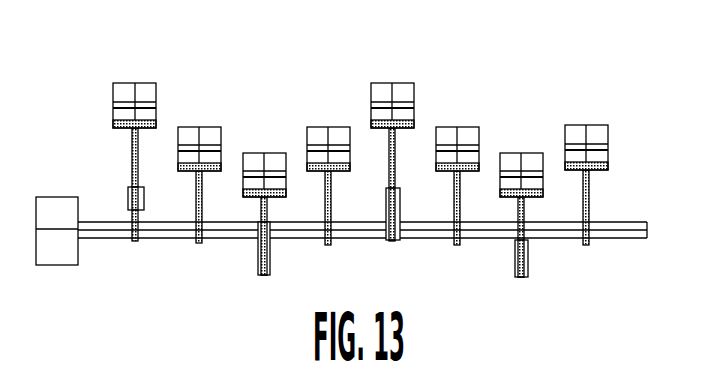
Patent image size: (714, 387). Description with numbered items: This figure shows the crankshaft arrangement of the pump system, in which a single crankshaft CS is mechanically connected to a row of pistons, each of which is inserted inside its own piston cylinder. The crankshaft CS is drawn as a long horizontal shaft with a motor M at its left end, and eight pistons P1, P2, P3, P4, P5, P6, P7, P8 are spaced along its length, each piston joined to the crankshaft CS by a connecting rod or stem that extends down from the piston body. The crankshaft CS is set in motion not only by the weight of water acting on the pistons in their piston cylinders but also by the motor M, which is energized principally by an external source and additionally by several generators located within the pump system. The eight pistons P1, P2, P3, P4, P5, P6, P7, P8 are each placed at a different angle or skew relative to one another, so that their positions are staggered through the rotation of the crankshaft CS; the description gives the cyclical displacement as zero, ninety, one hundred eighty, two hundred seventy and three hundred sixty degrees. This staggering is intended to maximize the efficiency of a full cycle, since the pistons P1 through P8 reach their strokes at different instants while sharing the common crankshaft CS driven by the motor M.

The motor M is at (42, 196).
The crankshaft CS is at (613, 221).
The piston P1 is at (138, 82).
The piston P2 is at (211, 124).
The piston P3 is at (263, 151).
The piston P4 is at (327, 125).
The piston P5 is at (393, 82).
The piston P6 is at (460, 125).
The piston P7 is at (523, 152).
The piston P8 is at (587, 124).